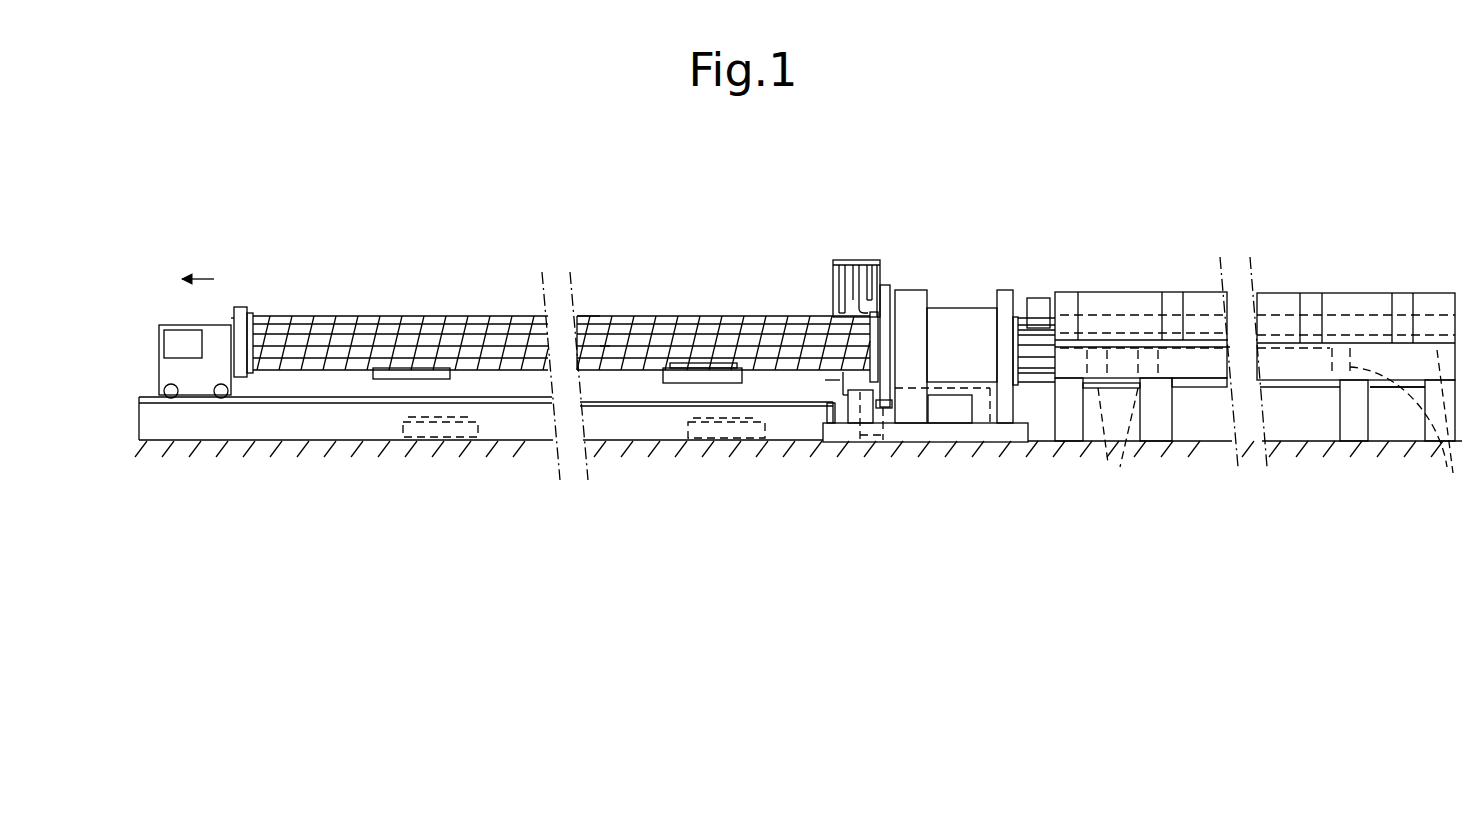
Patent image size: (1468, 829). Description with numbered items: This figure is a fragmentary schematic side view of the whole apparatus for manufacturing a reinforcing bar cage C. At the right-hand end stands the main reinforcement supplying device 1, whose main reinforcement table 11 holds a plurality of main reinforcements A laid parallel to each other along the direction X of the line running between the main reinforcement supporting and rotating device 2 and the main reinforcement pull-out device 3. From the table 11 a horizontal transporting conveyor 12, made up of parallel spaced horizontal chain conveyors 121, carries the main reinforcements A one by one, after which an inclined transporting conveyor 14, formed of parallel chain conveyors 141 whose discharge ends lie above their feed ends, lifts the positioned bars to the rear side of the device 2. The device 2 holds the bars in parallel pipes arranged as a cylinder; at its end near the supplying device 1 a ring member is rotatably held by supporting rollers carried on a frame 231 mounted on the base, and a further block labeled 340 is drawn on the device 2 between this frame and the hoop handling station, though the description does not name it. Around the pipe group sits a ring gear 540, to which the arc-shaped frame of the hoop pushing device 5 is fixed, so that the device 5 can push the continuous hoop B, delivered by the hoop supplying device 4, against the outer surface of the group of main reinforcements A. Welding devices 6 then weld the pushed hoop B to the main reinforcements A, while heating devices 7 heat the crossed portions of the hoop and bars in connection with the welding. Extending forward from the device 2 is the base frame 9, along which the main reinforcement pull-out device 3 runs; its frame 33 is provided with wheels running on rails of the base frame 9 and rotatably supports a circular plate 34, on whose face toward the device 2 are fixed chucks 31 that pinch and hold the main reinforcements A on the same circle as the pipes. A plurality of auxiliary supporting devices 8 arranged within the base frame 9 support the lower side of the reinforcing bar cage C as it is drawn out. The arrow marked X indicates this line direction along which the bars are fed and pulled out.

The main reinforcement supplying device 1 is at (1261, 360).
The main reinforcement supporting and rotating device 2 is at (926, 359).
The main reinforcement pull-out device 3 is at (245, 305).
The hoop supplying device 4 is at (994, 435).
The hoop pushing device 5 is at (858, 288).
The welding devices 6 is at (881, 255).
The heating devices 7 is at (878, 260).
The auxiliary supporting devices 8 is at (434, 391).
The base frame 9 is at (286, 432).
The main reinforcement table 11 is at (1300, 375).
The horizontal transporting conveyor 12 is at (1390, 392).
The inclined transporting conveyor 14 is at (1255, 299).
The chucks 31 is at (255, 311).
The frame 33 is at (196, 386).
The circular plate 34 is at (234, 318).
The horizontal chain conveyors 121 is at (1280, 429).
The chain conveyors 141 is at (1168, 292).
The frame 231 is at (1003, 290).
The head block 340 is at (918, 340).
The ring gear 540 is at (887, 283).
The main reinforcements A is at (727, 347).
The continuous hoop B is at (605, 343).
The reinforcing bar cage C is at (589, 313).
The direction of a line X is at (672, 158).